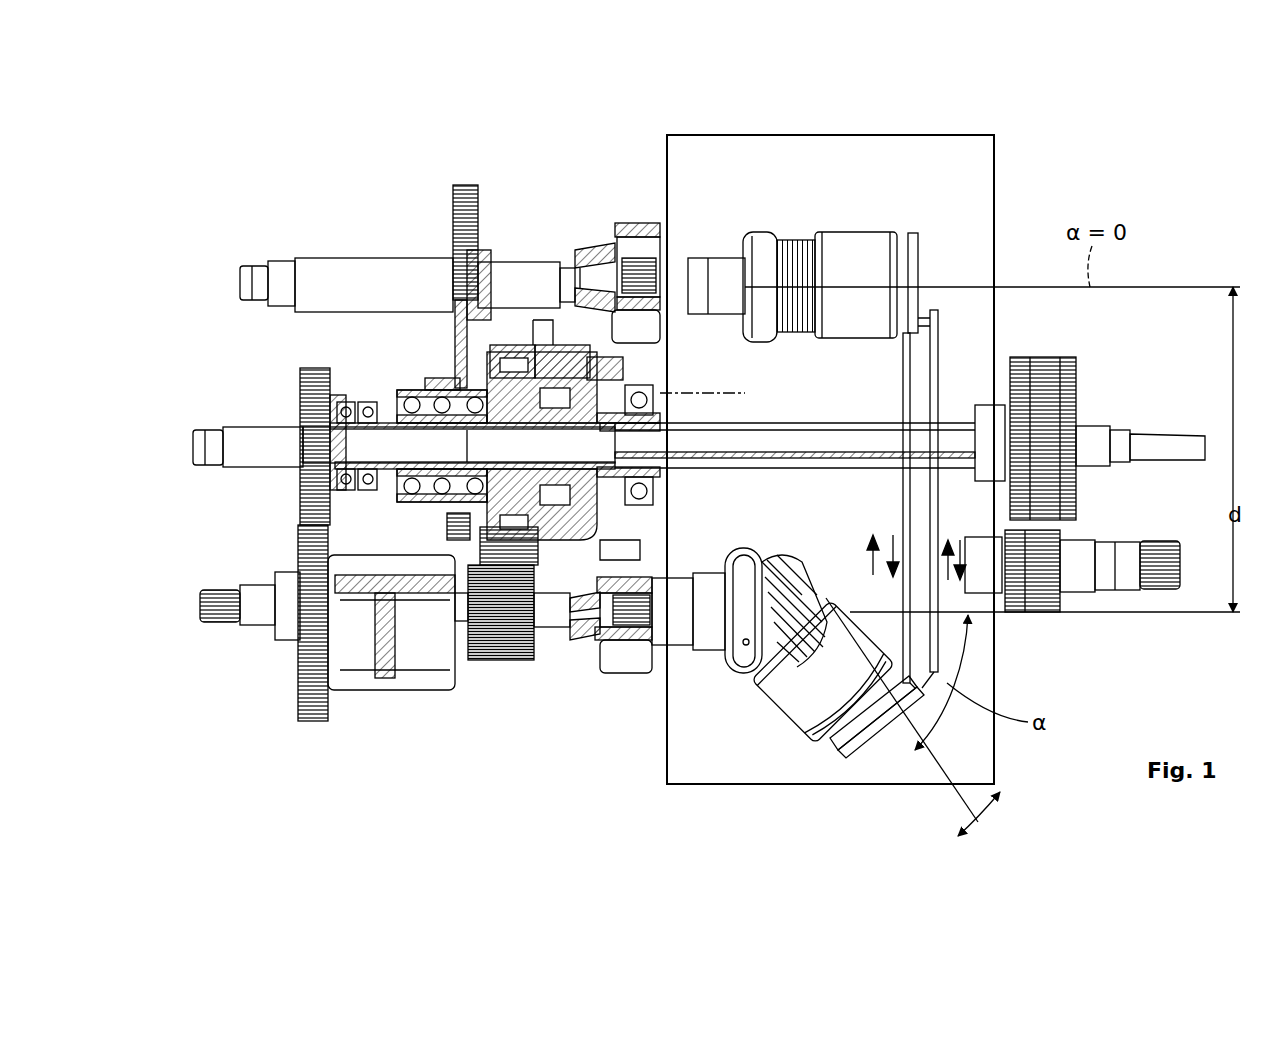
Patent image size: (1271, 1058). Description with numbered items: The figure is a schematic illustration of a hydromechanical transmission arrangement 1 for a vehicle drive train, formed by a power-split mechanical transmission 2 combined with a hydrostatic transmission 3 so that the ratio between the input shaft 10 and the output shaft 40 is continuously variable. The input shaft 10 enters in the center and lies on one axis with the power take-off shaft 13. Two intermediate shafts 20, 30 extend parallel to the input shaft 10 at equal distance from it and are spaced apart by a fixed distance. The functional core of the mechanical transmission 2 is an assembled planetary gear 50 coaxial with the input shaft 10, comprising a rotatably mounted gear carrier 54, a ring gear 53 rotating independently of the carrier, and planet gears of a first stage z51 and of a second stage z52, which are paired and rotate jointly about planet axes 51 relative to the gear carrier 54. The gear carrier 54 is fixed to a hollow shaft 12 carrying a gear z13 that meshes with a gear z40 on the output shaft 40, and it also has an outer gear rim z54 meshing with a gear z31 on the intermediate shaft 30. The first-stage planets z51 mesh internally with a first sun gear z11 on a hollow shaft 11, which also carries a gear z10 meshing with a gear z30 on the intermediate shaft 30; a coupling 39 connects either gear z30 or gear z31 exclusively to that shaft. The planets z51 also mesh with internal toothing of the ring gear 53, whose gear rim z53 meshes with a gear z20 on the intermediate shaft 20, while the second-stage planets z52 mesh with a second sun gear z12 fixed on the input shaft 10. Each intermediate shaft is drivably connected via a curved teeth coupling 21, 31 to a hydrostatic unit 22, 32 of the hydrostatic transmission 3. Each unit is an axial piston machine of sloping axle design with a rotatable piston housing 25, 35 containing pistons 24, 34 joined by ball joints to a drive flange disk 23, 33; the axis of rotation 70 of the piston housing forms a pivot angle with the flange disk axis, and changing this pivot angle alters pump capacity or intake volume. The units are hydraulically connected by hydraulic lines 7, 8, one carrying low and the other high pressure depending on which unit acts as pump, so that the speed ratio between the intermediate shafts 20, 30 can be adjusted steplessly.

The transmission arrangement 1 is at (1072, 150).
The power-split mechanical transmission 2 is at (624, 132).
The hydrostatic transmission 3 is at (822, 134).
The hydraulic line 7 is at (903, 493).
The hydraulic line 8 is at (938, 500).
The input shaft 10 is at (208, 470).
The hollow shaft 11 is at (383, 400).
The hollow shaft 12 is at (872, 425).
The power take-off shaft 13 is at (1173, 445).
The intermediate shaft 20 is at (298, 272).
The curved teeth coupling 21 is at (636, 222).
The hydrostatic unit 22 is at (840, 250).
The drive flange disk 23 is at (760, 232).
The pistons 24 is at (792, 240).
The piston housing 25 is at (862, 240).
The intermediate shaft 30 is at (205, 635).
The curved teeth coupling 31 is at (617, 685).
The hydrostatic unit 32 is at (773, 657).
The drive flange disk 33 is at (745, 625).
The pistons 34 is at (800, 592).
The piston housing 35 is at (812, 712).
The coupling 39 is at (383, 705).
The output shaft 40 is at (1185, 600).
The assembled planetary gear 50 is at (665, 385).
The planet axes 51 is at (740, 393).
The ring gear 53 is at (455, 378).
The gear carrier 54 is at (640, 545).
The axis of rotation 70 is at (1184, 287).
The gear z10 is at (302, 378).
The first sun gear z11 is at (445, 390).
The second sun gear z12 is at (660, 422).
The gear z13 is at (1043, 362).
The gear z20 is at (462, 188).
The gear z30 is at (318, 724).
The gear z31 is at (510, 665).
The gear z40 is at (1035, 616).
The planet gears of the first stage z51 is at (522, 345).
The planet gears of the second stage z52 is at (578, 335).
The gear rim z53 is at (455, 548).
The outer gear rim z54 is at (545, 575).